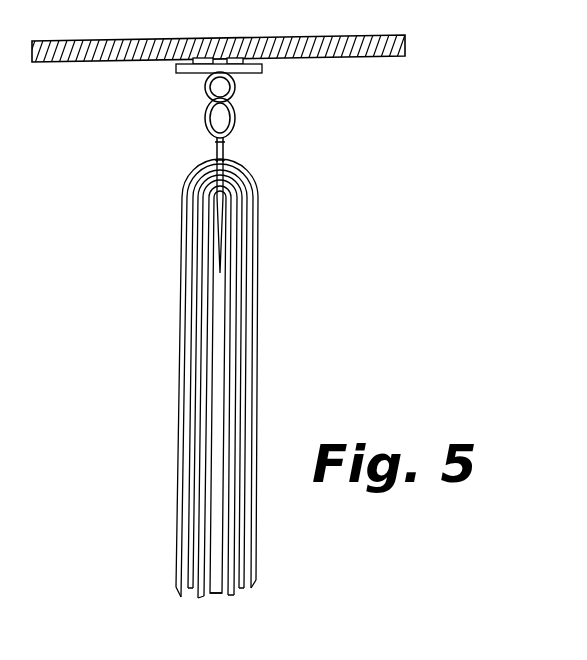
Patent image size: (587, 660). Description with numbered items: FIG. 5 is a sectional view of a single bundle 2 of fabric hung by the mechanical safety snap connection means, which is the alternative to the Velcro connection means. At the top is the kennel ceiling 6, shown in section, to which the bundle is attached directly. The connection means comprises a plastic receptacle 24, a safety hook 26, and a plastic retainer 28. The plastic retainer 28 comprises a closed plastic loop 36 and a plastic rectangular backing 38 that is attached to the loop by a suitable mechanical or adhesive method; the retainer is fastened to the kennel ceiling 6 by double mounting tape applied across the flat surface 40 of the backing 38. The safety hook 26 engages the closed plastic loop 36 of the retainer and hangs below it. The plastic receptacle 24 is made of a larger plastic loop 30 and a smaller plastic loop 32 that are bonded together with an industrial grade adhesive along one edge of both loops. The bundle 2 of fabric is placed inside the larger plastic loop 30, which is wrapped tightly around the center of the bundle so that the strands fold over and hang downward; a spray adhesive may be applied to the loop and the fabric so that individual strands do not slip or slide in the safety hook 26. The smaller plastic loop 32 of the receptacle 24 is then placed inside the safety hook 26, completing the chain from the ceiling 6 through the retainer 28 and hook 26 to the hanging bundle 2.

The bundle 2 is at (233, 375).
The kennel ceiling 6 is at (408, 49).
The plastic receptacle 24 is at (234, 153).
The safety hook 26 is at (240, 124).
The plastic retainer 28 is at (237, 97).
The larger plastic loop 30 is at (214, 201).
The smaller plastic loop 32 is at (208, 148).
The closed plastic loop 36 is at (204, 97).
The plastic rectangular backing 38 is at (174, 69).
The flat surface 40 is at (266, 63).